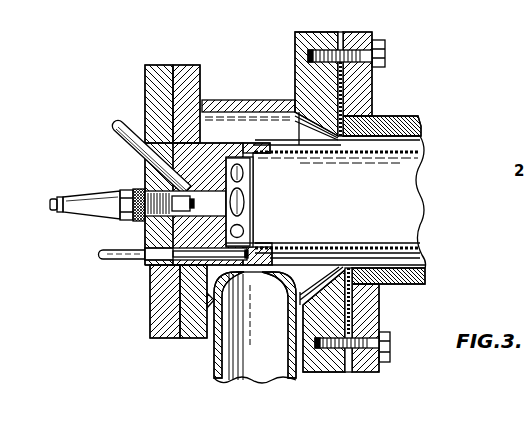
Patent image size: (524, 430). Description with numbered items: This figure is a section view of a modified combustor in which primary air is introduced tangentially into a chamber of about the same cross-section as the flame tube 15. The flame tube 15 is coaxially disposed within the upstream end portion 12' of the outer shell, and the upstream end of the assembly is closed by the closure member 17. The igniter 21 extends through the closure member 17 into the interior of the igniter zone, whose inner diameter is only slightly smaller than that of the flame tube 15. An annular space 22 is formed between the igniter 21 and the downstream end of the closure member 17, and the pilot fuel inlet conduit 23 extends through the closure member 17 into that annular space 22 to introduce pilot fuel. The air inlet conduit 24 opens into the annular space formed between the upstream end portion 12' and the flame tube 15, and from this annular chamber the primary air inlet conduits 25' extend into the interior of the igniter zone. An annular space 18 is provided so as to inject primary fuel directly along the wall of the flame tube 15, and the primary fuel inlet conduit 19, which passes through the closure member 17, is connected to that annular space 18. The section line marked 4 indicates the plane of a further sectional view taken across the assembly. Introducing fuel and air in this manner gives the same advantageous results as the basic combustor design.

The section line 4- 4 is at (234, 30).
The upstream end portion 12' is at (248, 93).
The flame tube 15 is at (338, 245).
The closure member 17 is at (145, 75).
The annular space 18 is at (251, 246).
The primary fuel inlet conduit 19 is at (118, 262).
The igniter 21 is at (86, 203).
The annular space 22 is at (190, 215).
The pilot fuel inlet conduit 23 is at (118, 142).
The air inlet conduit 24 is at (214, 357).
The primary air inlet conduits 25' is at (259, 202).